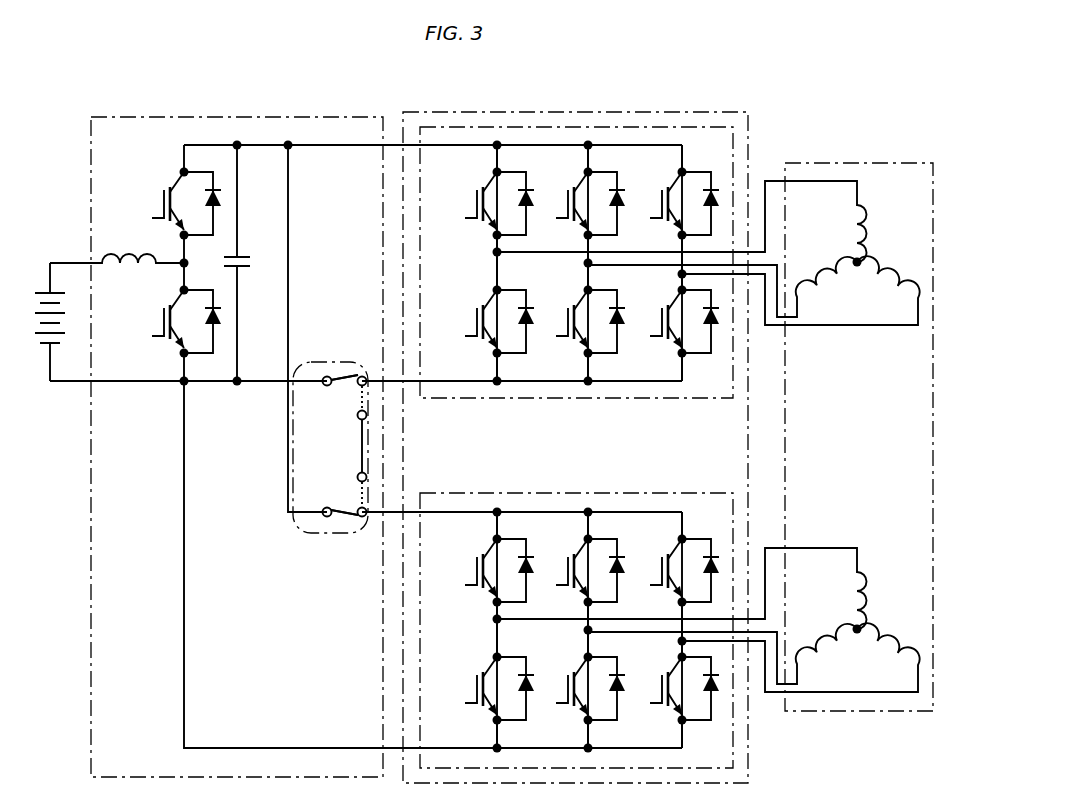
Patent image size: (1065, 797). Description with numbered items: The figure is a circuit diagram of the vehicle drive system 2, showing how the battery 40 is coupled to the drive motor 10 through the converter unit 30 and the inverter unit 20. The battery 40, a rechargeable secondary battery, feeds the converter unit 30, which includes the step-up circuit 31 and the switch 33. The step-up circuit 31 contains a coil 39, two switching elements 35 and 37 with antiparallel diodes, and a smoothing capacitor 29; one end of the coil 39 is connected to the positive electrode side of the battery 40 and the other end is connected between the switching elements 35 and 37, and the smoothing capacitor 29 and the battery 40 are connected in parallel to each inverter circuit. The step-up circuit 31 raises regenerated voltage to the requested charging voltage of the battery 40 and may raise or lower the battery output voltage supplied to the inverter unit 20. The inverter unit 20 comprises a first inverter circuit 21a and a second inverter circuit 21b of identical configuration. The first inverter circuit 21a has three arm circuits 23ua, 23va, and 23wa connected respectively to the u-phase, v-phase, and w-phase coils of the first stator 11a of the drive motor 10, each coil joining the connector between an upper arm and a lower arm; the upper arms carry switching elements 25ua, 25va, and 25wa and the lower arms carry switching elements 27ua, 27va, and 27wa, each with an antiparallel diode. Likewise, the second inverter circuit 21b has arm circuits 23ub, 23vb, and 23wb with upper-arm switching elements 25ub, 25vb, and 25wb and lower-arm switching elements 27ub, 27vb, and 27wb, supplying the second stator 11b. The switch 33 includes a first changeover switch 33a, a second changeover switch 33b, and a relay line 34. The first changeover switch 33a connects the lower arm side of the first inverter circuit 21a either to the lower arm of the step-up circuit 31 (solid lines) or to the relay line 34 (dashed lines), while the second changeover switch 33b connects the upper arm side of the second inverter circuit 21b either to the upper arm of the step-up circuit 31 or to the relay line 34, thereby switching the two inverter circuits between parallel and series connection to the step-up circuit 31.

The vehicle drive system 2 is at (862, 781).
The drive motor 10 is at (719, 418).
The first stator 11a is at (878, 242).
The second stator 11b is at (878, 609).
The inverter unit 20 is at (728, 112).
The first inverter circuit 21a is at (455, 398).
The second inverter circuit 21b is at (450, 493).
The arm circuit 23ua is at (498, 135).
The arm circuit 23va is at (588, 135).
The arm circuit 23wa is at (682, 135).
The arm circuit 23ub is at (498, 502).
The arm circuit 23vb is at (588, 502).
The arm circuit 23wb is at (682, 502).
The switching element 25ua is at (488, 182).
The switching element 25va is at (579, 182).
The switching element 25wa is at (673, 182).
The switching element 25ub is at (488, 549).
The switching element 25vb is at (579, 549).
The switching element 25wb is at (673, 549).
The switching element 27ua is at (490, 345).
The switching element 27va is at (581, 345).
The switching element 27wa is at (675, 345).
The switching element 27ub is at (490, 712).
The switching element 27vb is at (581, 712).
The switching element 27wb is at (675, 712).
The smoothing capacitor 29 is at (245, 248).
The converter unit 30 is at (293, 117).
The step-up circuit 31 is at (187, 133).
The switch 33 is at (368, 419).
The first changeover switch 33a is at (350, 393).
The second changeover switch 33b is at (350, 503).
The relay line 34 is at (364, 445).
The switching element 35 is at (172, 182).
The switching element 37 is at (177, 338).
The coil 39 is at (127, 248).
The battery 40 is at (37, 350).